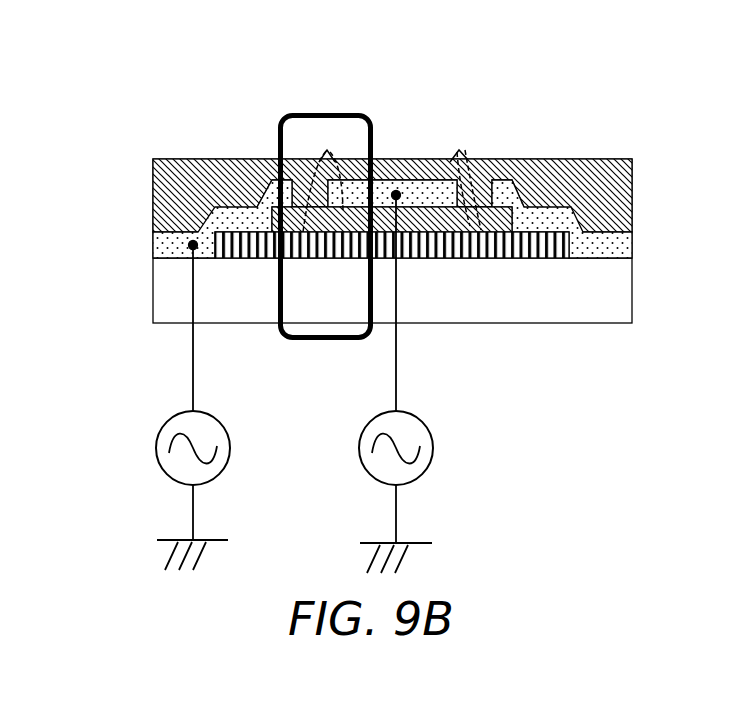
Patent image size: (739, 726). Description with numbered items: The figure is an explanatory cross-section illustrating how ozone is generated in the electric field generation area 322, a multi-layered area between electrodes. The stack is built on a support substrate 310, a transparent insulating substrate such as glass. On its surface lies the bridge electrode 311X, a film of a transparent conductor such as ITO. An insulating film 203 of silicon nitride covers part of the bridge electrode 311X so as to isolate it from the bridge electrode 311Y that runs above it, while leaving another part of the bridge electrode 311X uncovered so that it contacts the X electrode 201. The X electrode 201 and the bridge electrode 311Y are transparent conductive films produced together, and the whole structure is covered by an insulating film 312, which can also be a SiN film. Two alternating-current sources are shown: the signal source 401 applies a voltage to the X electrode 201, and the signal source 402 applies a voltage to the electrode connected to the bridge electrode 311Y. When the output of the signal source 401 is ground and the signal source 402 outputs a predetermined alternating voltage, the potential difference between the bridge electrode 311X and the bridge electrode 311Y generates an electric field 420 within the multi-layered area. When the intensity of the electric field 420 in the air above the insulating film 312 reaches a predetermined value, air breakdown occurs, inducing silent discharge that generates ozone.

The X electrode 201 is at (153, 245).
The insulating film 203 is at (503, 205).
The support substrate 310 is at (153, 290).
The bridge electrode 311X is at (460, 259).
The bridge electrode 311Y is at (430, 174).
The insulating film 312 is at (232, 158).
The electric field generation area 322 is at (332, 110).
The signal source 401 is at (155, 442).
The signal source 402 is at (359, 447).
The electric field 420 is at (323, 152).